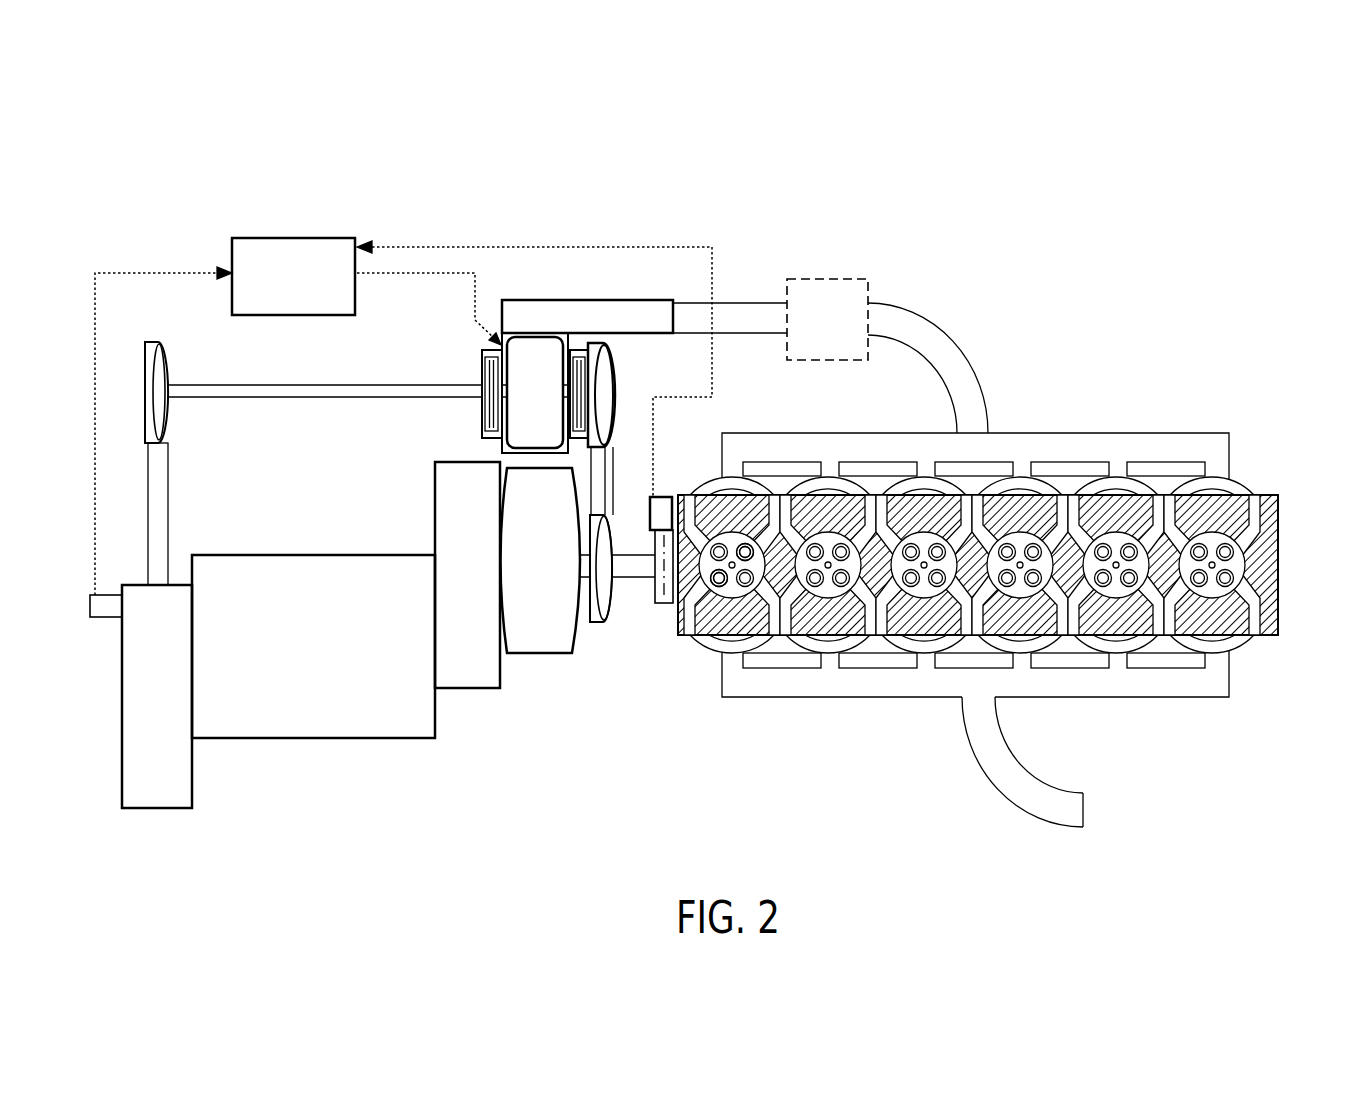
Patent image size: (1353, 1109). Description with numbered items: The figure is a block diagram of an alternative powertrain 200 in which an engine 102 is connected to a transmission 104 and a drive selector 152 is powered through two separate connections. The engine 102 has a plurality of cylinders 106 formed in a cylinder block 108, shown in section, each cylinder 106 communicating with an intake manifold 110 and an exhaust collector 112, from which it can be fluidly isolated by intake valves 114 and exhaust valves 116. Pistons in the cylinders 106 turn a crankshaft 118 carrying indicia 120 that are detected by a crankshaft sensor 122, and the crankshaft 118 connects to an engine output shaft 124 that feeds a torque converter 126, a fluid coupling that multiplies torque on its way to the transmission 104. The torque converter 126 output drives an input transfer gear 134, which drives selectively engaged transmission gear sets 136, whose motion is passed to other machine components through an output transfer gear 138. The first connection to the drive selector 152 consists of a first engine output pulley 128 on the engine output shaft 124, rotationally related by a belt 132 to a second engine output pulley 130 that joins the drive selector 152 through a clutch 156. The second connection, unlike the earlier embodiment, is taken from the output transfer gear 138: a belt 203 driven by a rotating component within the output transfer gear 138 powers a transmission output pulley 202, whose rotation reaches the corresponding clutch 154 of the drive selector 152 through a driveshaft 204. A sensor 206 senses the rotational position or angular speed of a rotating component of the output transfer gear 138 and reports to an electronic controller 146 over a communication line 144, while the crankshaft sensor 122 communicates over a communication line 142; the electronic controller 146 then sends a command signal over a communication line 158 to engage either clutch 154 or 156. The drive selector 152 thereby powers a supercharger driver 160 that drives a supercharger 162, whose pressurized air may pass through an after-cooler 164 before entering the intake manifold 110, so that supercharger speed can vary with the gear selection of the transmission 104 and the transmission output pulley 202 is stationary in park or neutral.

The engine 102 is at (1222, 392).
The transmission 104 is at (312, 812).
The cylinder 106 is at (732, 592).
The cylinder block 108 is at (1283, 578).
The intake manifold 110 is at (1040, 442).
The exhaust collector 112 is at (1105, 690).
The intake valve 114 is at (748, 553).
The exhaust valve 116 is at (717, 580).
The crankshaft 118 is at (663, 583).
The indicia 120 is at (658, 590).
The crankshaft sensor 122 is at (663, 503).
The engine output shaft 124 is at (625, 570).
The torque converter 126 is at (541, 560).
The first engine output pulley 128 is at (603, 612).
The second engine output pulley 130 is at (600, 350).
The belt 132 is at (607, 468).
The input transfer gear 134 is at (467, 575).
The transmission gear sets 136 is at (313, 646).
The output transfer gear 138 is at (157, 696).
The communication line 142 is at (714, 275).
The communication line 144 is at (132, 278).
The electronic controller 146 is at (293, 276).
The drive selector 152 is at (490, 203).
The clutch 154 is at (482, 353).
The clutch 156 is at (577, 348).
The communication line 158 is at (440, 272).
The supercharger driver 160 is at (530, 343).
The supercharger 162 is at (645, 312).
The after-cooler 164 is at (850, 280).
The powertrain 200 is at (1152, 211).
The transmission output pulley 202 is at (162, 338).
The belt 203 is at (158, 508).
The driveshaft 204 is at (307, 383).
The sensor 206 is at (108, 620).